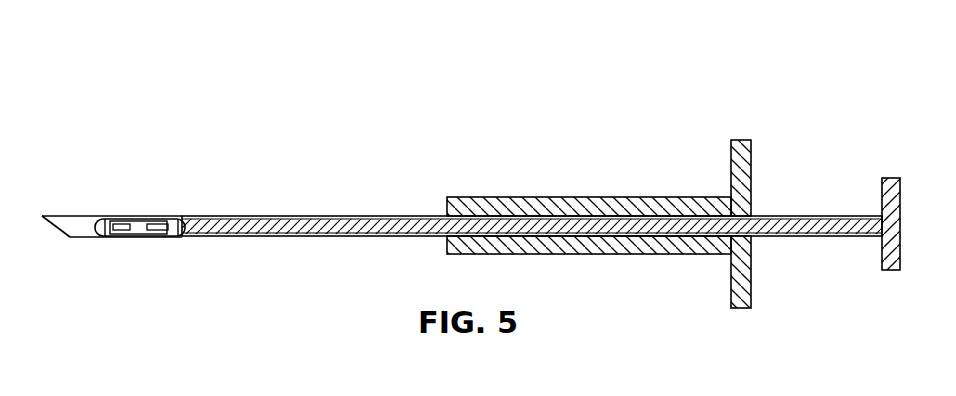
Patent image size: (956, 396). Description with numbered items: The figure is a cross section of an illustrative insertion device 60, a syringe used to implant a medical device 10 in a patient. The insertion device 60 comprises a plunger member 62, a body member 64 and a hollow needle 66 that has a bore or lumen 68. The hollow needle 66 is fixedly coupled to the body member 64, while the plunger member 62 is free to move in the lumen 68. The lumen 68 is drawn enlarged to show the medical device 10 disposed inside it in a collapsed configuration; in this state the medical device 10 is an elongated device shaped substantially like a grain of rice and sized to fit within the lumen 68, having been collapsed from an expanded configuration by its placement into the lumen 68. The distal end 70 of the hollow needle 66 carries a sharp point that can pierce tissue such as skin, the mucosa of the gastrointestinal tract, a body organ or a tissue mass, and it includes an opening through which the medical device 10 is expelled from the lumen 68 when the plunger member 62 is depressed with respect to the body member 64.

The medical device 10 is at (162, 214).
The insertion device 60 is at (295, 168).
The plunger member 62 is at (825, 215).
The body member 64 is at (673, 203).
The hollow needle 66 is at (390, 215).
The lumen 68 is at (84, 234).
The distal end 70 is at (60, 218).